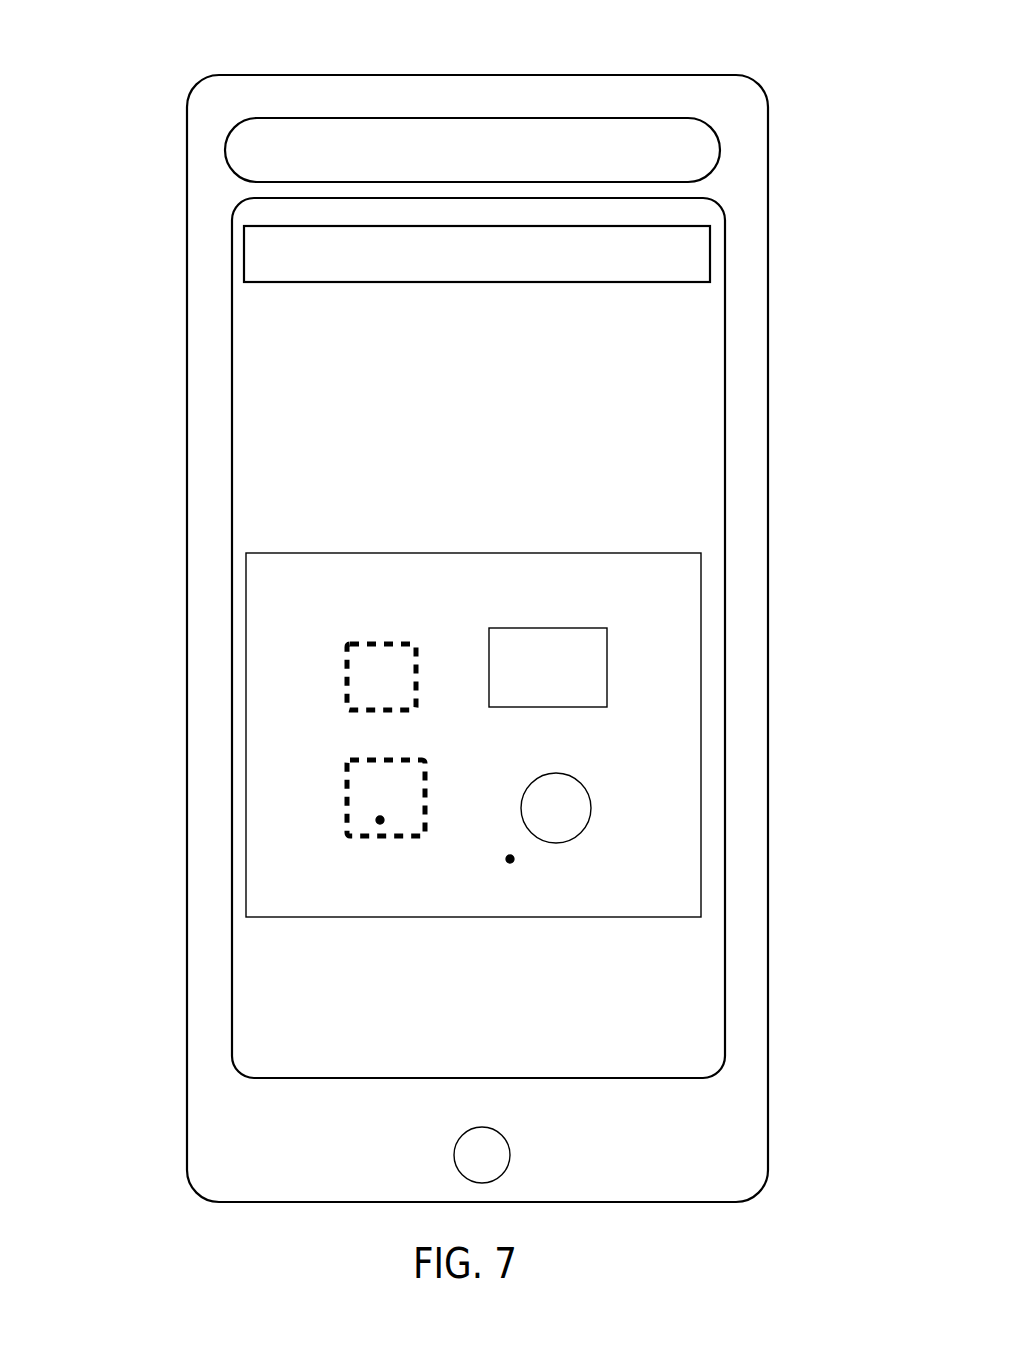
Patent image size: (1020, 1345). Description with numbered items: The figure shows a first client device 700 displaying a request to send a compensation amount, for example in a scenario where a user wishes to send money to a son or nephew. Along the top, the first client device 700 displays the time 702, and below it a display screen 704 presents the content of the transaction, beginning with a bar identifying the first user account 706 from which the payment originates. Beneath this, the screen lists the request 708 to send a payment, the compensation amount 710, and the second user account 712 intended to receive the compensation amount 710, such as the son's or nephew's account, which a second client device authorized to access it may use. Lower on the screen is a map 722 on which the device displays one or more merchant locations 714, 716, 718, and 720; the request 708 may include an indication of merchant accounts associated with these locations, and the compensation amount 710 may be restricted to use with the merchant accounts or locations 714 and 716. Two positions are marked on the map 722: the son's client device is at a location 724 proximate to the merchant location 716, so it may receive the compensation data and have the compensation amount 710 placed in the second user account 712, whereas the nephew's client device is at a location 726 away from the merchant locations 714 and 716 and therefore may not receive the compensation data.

The first client device 700 is at (97, 26).
The time 702 is at (226, 122).
The display screen 704 is at (228, 206).
The first user account 706 is at (477, 254).
The request 708 is at (477, 332).
The compensation amount 710 is at (477, 397).
The second user account 712 is at (476, 468).
The merchant location 714 is at (381, 677).
The merchant location 716 is at (386, 798).
The merchant location 718 is at (548, 667).
The merchant location 720 is at (556, 808).
The map 722 is at (577, 553).
The location 724 is at (380, 820).
The location 726 is at (510, 859).